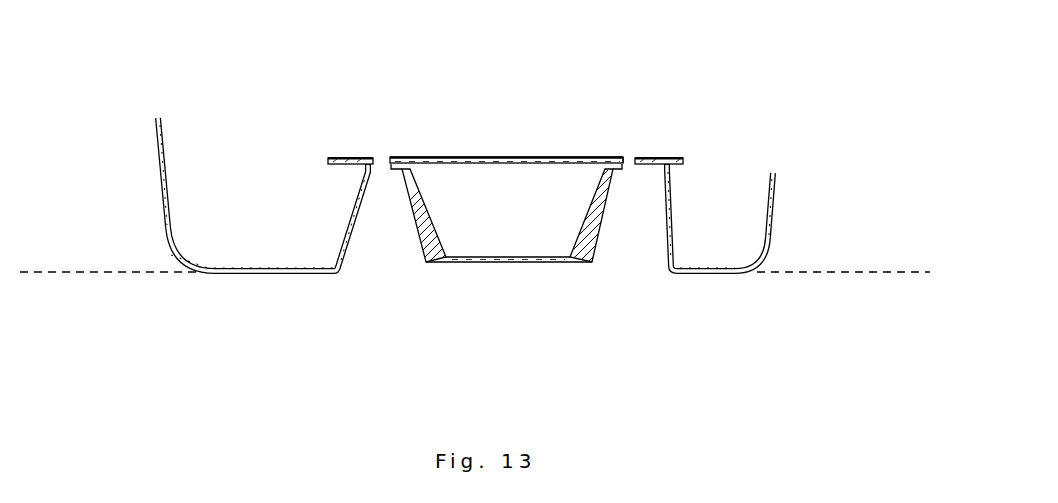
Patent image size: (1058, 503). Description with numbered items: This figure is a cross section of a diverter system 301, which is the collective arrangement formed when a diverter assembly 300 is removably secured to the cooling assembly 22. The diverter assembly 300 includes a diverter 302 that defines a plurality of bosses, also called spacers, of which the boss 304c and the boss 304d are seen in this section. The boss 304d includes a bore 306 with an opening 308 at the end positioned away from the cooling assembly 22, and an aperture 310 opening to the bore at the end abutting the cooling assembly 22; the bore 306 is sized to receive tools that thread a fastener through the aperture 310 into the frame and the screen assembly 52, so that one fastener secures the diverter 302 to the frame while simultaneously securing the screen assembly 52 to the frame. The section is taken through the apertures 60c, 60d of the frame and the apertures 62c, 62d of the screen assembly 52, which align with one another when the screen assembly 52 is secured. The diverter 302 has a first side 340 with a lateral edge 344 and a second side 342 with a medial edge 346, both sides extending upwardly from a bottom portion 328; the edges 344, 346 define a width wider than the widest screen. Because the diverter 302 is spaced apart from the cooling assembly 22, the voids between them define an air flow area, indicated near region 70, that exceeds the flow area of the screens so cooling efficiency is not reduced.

The diverter system 301 is at (850, 23).
The medial edge 346 is at (153, 140).
The second side 342 is at (167, 241).
The diverter 302 is at (205, 273).
The aperture of the screen assembly 62c is at (374, 156).
The aperture of the frame 60c is at (384, 160).
The screen assembly 52 is at (448, 158).
The aperture of the screen assembly 62d is at (621, 155).
The aperture of the frame 60d is at (633, 162).
The cooling assembly 22 is at (685, 160).
The tray cavity 70 is at (462, 168).
The boss 304c is at (535, 240).
The boss 304d is at (582, 220).
The bottom portion 328 is at (553, 265).
The aperture 310 is at (630, 183).
The bore 306 is at (618, 255).
The opening 308 is at (652, 268).
The diverter assembly 300 is at (775, 223).
The lateral edge 344 is at (780, 177).
The first side 340 is at (758, 272).